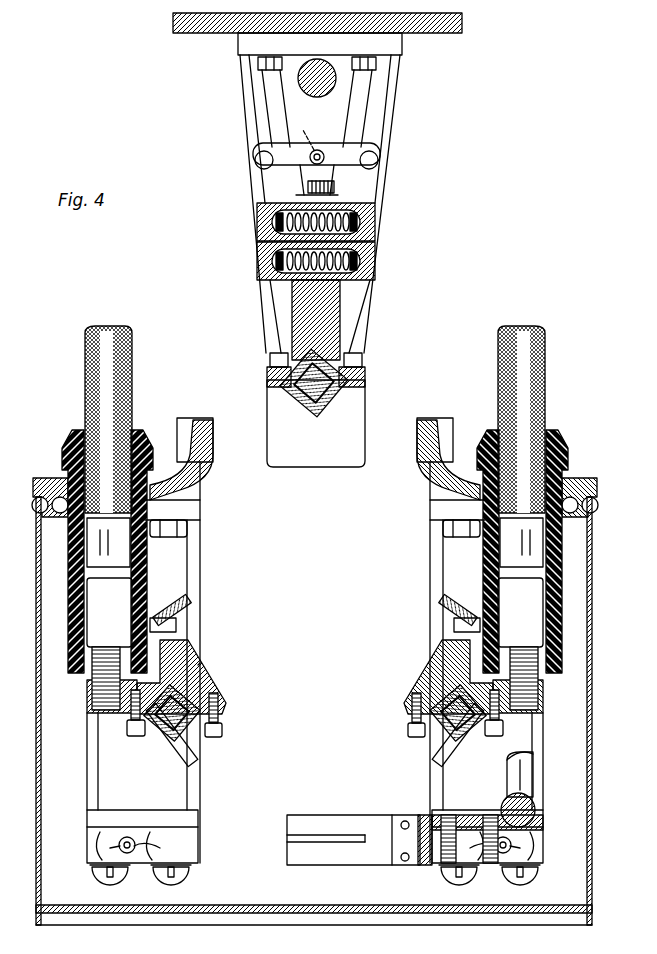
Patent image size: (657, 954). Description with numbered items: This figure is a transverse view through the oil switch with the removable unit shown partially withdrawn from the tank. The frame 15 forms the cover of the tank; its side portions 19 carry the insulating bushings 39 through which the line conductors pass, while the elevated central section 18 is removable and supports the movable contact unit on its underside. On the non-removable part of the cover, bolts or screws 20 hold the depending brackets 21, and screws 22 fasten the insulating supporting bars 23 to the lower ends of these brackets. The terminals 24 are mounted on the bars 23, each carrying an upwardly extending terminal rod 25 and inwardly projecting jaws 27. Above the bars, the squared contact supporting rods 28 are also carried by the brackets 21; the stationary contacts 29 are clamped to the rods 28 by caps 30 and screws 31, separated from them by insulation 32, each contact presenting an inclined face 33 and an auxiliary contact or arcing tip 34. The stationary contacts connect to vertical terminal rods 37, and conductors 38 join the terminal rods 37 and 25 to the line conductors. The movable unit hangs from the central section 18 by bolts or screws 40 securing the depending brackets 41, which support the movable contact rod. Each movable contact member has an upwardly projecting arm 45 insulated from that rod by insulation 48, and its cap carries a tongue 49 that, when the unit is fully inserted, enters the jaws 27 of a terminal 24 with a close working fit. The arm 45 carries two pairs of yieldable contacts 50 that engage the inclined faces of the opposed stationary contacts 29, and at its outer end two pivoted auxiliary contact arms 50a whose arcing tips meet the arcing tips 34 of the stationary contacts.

The frame 15 is at (185, 424).
The central section 18 is at (204, 34).
The side portions 19 is at (588, 483).
The bolts or screws 20 is at (189, 529).
The depending brackets 21 is at (428, 570).
The screws 22 is at (162, 876).
The insulating supporting bars 23 is at (198, 852).
The terminals 24 is at (418, 866).
The terminal rod 25 is at (534, 768).
The jaws 27 is at (310, 866).
The contact supporting rods 28 is at (155, 746).
The stationary contacts 29 is at (214, 684).
The caps 30 is at (198, 746).
The screws 31 is at (222, 738).
The insulation 32 is at (190, 742).
The inclined face 33 is at (200, 663).
The auxiliary contact or arcing tip 34 is at (188, 598).
The vertical terminal rods 37 is at (88, 684).
The conductors 38 is at (315, 486).
The insulating bushings 39 is at (70, 445).
The bolts or screws 40 is at (378, 64).
The depending brackets 41 is at (388, 138).
The arm 45 is at (342, 318).
The insulation 48 is at (298, 399).
The tongues 49 is at (338, 468).
The yieldable contacts 50 is at (376, 250).
The pivoted auxiliary contact arms 50a is at (259, 160).